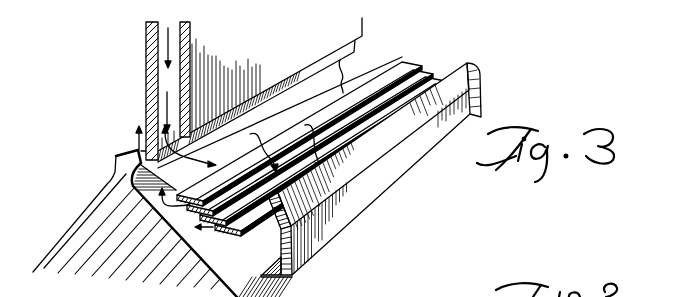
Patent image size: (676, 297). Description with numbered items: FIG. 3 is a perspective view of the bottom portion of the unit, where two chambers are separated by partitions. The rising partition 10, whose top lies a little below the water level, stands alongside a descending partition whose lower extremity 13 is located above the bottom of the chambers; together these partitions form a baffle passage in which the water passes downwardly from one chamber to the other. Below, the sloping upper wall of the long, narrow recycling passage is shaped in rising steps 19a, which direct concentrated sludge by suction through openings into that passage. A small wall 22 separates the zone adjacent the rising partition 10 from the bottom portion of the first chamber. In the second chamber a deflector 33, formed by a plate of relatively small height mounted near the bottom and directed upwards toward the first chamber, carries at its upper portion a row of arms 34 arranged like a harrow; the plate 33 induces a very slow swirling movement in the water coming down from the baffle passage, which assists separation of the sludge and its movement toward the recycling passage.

The rising partition 10 is at (146, 76).
The lower extremity 13 is at (190, 68).
The rising steps 19a is at (385, 73).
The small wall 22 is at (120, 175).
The deflector 33 is at (337, 225).
The arms 34 is at (382, 145).